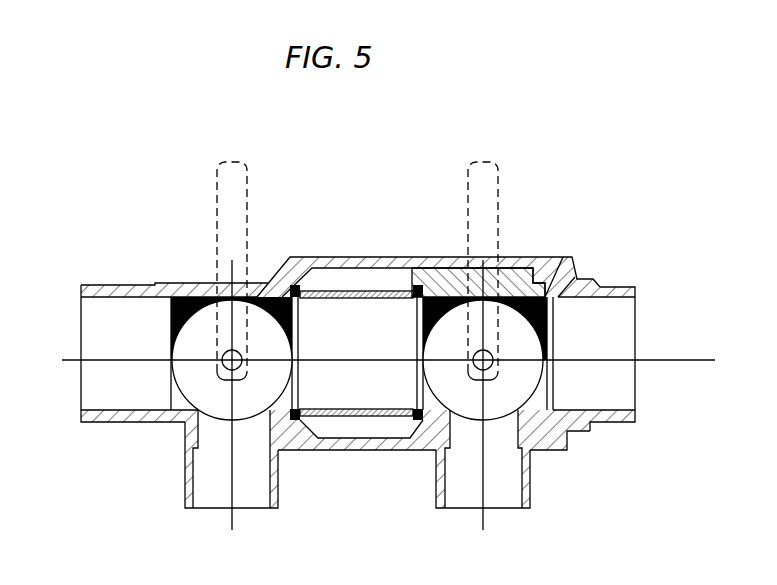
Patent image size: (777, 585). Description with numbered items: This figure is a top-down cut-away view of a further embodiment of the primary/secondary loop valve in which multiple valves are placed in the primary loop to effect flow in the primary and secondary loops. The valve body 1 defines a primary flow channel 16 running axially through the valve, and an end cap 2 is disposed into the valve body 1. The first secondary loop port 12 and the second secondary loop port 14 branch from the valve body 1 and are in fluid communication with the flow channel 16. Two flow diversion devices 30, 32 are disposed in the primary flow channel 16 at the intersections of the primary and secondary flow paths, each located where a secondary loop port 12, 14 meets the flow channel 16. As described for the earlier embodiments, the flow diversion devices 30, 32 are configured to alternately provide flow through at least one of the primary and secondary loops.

The valve body 1 is at (123, 287).
The end cap 2 is at (572, 276).
The first secondary loop port 12 is at (527, 483).
The second secondary loop port 14 is at (188, 475).
The flow channel 16 is at (80, 314).
The flow diversion device 30 is at (452, 388).
The flow diversion device 32 is at (198, 388).